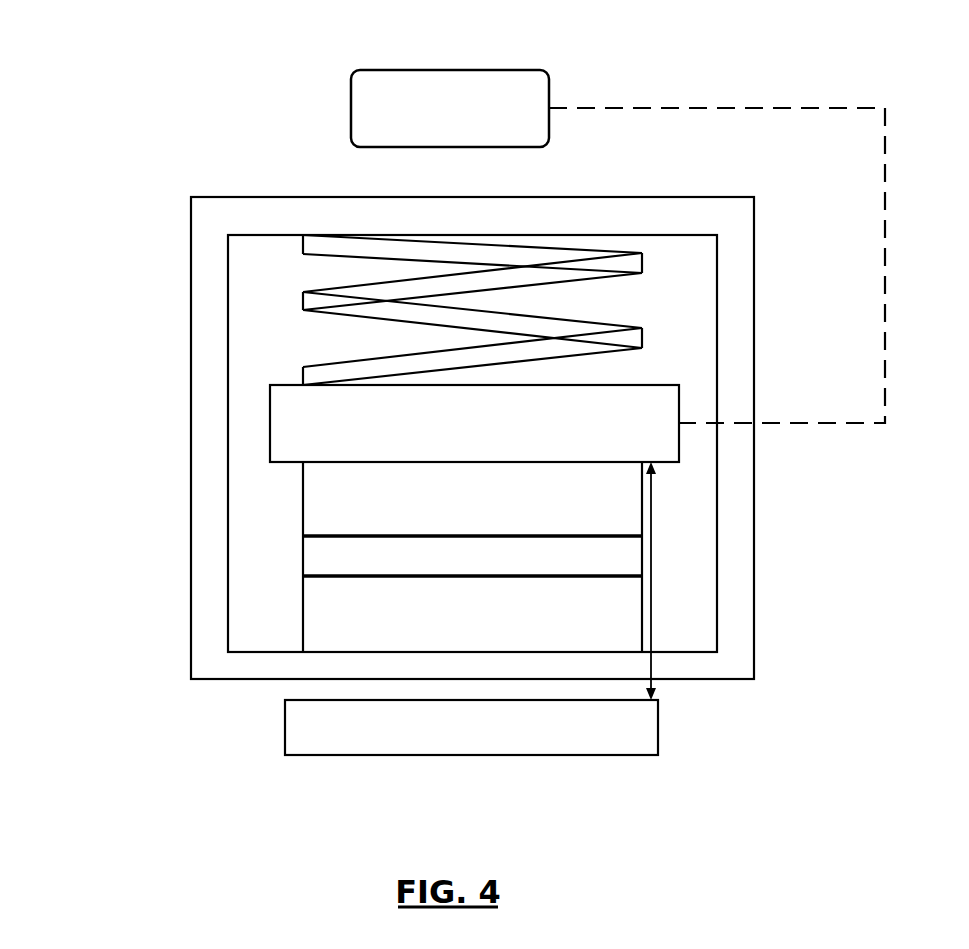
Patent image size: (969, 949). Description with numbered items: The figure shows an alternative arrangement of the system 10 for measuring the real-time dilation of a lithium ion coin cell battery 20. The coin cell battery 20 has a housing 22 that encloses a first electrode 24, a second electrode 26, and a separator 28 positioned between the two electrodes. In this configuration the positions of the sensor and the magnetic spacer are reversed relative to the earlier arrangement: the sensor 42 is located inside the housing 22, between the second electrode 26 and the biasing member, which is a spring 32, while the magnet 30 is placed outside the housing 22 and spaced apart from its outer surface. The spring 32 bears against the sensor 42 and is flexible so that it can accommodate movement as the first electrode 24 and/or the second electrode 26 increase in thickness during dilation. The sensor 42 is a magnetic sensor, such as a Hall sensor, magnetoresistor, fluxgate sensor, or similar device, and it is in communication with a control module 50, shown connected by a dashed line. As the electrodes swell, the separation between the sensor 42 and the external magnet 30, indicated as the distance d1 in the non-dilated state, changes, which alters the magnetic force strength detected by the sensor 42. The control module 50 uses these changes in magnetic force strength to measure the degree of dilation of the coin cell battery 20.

The system 10 is at (136, 118).
The coin cell battery 20 is at (754, 256).
The housing 22 is at (733, 334).
The first electrode 24 is at (322, 605).
The second electrode 26 is at (320, 499).
The separator 28 is at (318, 558).
The magnetic spacer 30 is at (322, 729).
The spring 32 is at (302, 299).
The sensor 42 is at (303, 419).
The control module 50 is at (440, 69).
The distance d1 is at (651, 586).